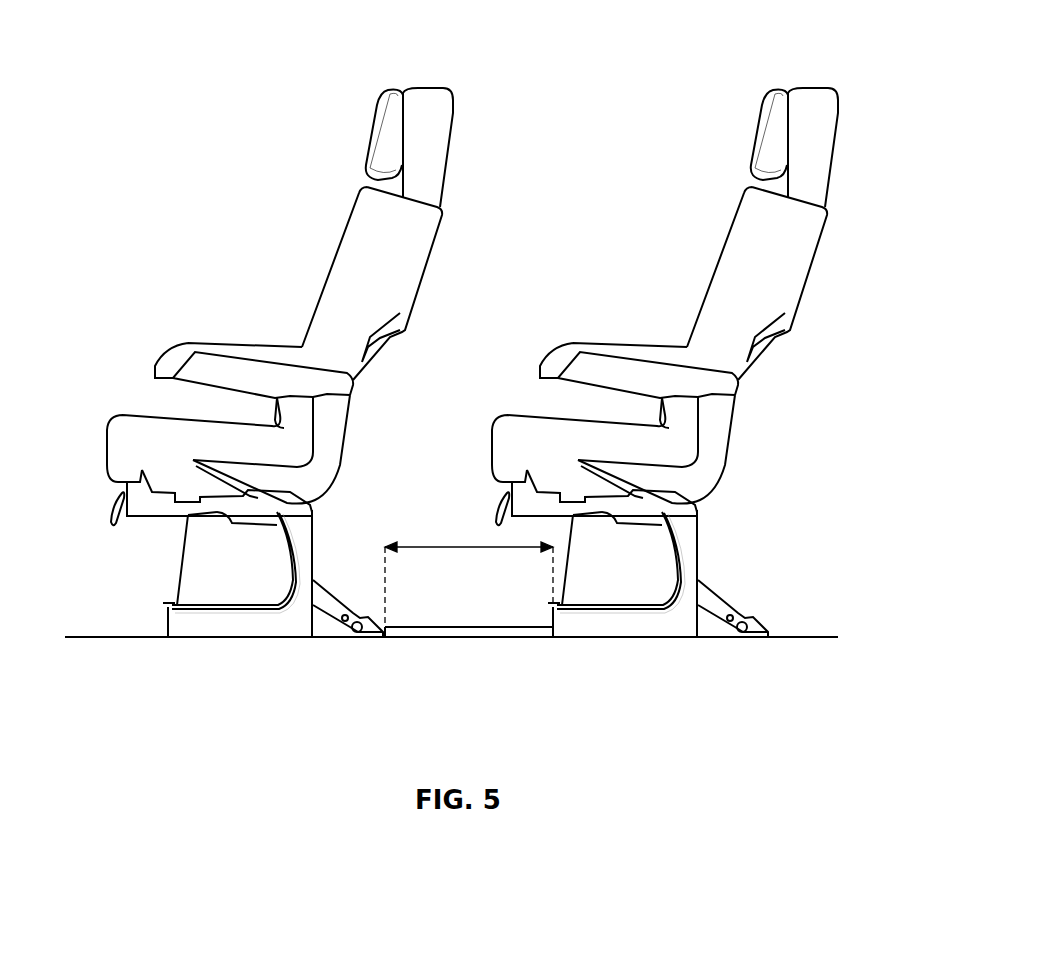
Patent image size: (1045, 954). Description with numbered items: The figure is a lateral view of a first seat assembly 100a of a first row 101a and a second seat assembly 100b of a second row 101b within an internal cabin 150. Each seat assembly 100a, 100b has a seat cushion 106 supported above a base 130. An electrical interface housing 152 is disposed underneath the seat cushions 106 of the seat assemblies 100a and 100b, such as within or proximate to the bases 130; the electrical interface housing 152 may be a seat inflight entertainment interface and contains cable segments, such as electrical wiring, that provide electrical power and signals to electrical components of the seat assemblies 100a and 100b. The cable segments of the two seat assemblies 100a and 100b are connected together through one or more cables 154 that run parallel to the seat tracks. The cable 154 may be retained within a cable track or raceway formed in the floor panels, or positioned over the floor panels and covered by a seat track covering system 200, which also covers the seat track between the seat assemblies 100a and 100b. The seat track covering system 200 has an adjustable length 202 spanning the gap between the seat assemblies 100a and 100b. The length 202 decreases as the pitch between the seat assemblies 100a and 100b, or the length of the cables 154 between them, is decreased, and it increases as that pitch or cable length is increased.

The internal cabin 150 is at (489, 372).
The first seat assembly 100a is at (339, 331).
The second seat assembly 100b is at (722, 331).
The first row 101a is at (417, 80).
The second row 101b is at (843, 168).
The seat cushion 106 is at (107, 438).
The base 130 is at (300, 552).
The electrical interface housing 152 is at (197, 558).
The cable 154 is at (423, 638).
The seat track covering system 200 is at (438, 627).
The adjustable length 202 is at (425, 546).